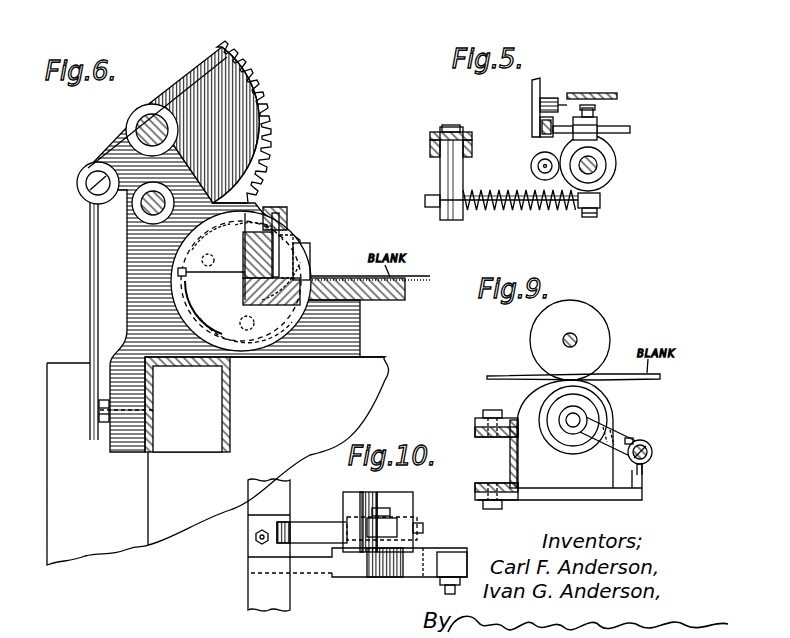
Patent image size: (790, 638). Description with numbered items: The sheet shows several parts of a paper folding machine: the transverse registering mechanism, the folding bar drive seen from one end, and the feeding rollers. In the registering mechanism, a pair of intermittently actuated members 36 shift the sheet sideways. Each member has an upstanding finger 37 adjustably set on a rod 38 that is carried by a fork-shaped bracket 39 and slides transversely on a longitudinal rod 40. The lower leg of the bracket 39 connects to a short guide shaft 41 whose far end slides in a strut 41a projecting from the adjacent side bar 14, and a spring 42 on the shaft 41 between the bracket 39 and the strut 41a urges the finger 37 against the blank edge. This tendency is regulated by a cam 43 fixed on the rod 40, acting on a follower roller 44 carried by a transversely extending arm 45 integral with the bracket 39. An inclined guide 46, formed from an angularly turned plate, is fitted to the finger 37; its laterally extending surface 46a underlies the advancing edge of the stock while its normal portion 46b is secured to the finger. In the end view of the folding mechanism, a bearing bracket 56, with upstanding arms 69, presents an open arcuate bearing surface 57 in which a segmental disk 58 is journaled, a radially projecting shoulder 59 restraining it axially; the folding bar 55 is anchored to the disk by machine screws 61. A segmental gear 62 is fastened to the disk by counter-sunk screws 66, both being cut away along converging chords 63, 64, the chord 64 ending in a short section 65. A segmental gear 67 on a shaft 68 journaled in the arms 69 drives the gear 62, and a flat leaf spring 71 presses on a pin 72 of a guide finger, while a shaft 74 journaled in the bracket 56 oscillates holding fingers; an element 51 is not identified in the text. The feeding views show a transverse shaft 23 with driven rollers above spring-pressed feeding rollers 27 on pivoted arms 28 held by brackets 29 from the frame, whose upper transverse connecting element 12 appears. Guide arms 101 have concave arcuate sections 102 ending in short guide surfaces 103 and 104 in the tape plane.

In FIG. 9, the upper transverse connecting element 12 is at (510, 447).
In FIG. 10, the upper transverse connecting element 12 is at (255, 582).
In FIG. 6, the upper side bar 14 is at (162, 383).
In FIG. 9, the transverse shaft 23 is at (582, 338).
In FIG. 9, the feeding roller 27 is at (612, 410).
In FIG. 10, the feeding roller 27 is at (424, 528).
In FIG. 9, the pivoted arm 28 is at (613, 440).
In FIG. 10, the pivoted arm 28 is at (418, 567).
In FIG. 9, the bracket 29 is at (560, 493).
In FIG. 10, the bracket 29 is at (323, 565).
In FIG. 5, the intermittently actuated member 36 is at (606, 115).
In FIG. 5, the upstanding finger 37 is at (538, 82).
In FIG. 5, the rod 38 is at (630, 132).
In FIG. 5, the fork-shaped bracket 39 is at (607, 143).
In FIG. 5, the rod 40 is at (600, 170).
In FIG. 5, the guide shaft 41 is at (518, 207).
In FIG. 5, the strut 41a is at (440, 173).
In FIG. 5, the spring means 42 is at (488, 207).
In FIG. 5, the cam 43 is at (604, 205).
In FIG. 5, the follower roller 44 is at (533, 167).
In FIG. 5, the transversely extending arm 45 is at (563, 150).
In FIG. 5, the inclined guide surface 46 is at (545, 97).
In FIG. 5, the laterally extending guide surface 46a is at (575, 108).
In FIG. 5, the normal portion 46b is at (540, 115).
In FIG. 6, the die block 51 is at (383, 297).
In FIG. 6, the folding bar 55 is at (287, 230).
In FIG. 6, the bearing bracket 56 is at (133, 250).
In FIG. 6, the arcuate bearing surface 57 is at (184, 281).
In FIG. 6, the segmental disk 58 is at (218, 260).
In FIG. 6, the radially projecting shoulder 59 is at (183, 270).
In FIG. 6, the machine screw 61 is at (308, 245).
In FIG. 6, the segmental gear 62 is at (260, 210).
In FIG. 6, the cord 63 is at (230, 279).
In FIG. 6, the cord 64 is at (233, 332).
In FIG. 6, the short section 65 is at (271, 292).
In FIG. 6, the counter-sunk machine screw 66 is at (263, 212).
In FIG. 6, the segmental gear 67 is at (247, 83).
In FIG. 6, the shaft 68 is at (152, 113).
In FIG. 6, the upstanding arm 69 is at (137, 162).
In FIG. 6, the flat leaf spring 71 is at (267, 215).
In FIG. 6, the pin 72 is at (268, 220).
In FIG. 6, the shaft 74 is at (140, 202).
In FIG. 9, the guide arm 101 is at (513, 398).
In FIG. 10, the guide arm 101 is at (320, 522).
In FIG. 10, the concave arcuate section 102 is at (395, 492).
In FIG. 10, the guide surface 103 is at (352, 492).
In FIG. 10, the guide surface 104 is at (413, 492).